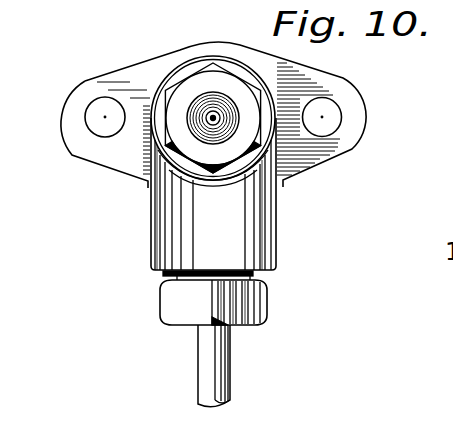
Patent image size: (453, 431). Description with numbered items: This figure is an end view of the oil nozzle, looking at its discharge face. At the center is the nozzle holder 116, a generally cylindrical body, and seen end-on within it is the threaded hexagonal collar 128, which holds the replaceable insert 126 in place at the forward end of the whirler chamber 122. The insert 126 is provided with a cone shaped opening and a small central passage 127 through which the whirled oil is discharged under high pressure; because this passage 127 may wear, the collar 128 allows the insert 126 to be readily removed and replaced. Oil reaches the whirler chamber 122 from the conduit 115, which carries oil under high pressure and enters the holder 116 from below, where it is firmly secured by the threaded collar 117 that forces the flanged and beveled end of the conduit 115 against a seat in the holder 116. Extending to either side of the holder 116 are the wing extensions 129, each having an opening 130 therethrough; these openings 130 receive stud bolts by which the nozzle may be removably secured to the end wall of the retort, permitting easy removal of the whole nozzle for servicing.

The conduit 115 is at (205, 383).
The nozzle holder 116 is at (173, 200).
The threaded collar 117 is at (167, 305).
The whirler chamber 122 is at (123, 5).
The replaceable insert 126 is at (207, 113).
The passage 127 is at (216, 115).
The threaded hexagonal collar 128 is at (235, 150).
The wing extensions 129 is at (85, 85).
The openings 130 is at (100, 128).